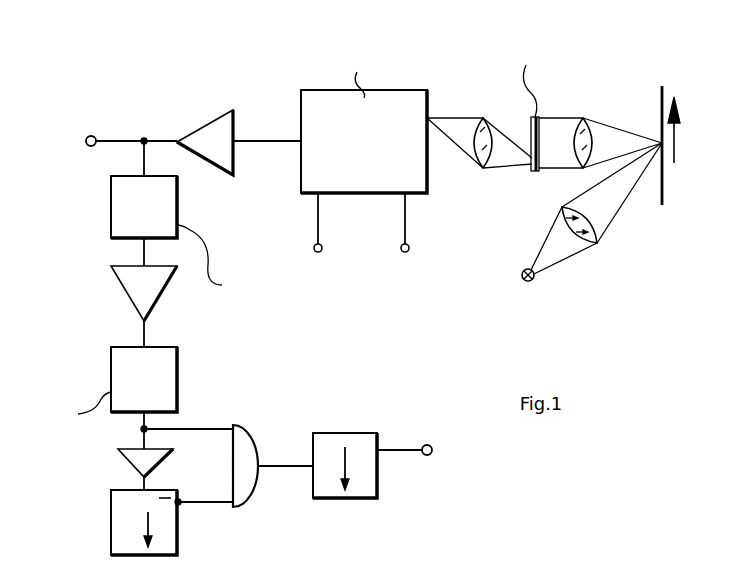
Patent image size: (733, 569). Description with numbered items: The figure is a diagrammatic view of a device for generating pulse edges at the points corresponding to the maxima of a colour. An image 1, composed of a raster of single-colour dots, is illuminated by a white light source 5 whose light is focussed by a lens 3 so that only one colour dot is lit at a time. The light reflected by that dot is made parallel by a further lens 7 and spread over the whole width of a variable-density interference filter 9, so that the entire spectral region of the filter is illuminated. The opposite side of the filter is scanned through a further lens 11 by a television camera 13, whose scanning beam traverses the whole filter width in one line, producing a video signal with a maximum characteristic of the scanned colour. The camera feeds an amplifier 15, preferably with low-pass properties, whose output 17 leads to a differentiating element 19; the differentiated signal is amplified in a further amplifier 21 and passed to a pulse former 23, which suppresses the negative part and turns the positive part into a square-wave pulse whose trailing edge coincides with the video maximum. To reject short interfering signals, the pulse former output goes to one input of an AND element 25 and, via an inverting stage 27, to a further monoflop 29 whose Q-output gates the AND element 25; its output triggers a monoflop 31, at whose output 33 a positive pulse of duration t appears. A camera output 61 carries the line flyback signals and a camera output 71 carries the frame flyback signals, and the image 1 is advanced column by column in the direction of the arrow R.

The image 1 is at (665, 197).
The lens 3 is at (598, 244).
The white light source 5 is at (535, 278).
The further lens 7 is at (583, 117).
The variable-density interference filter 9 is at (535, 166).
The further lens 11 is at (485, 117).
The television camera 13 is at (367, 154).
The amplifier 15 is at (208, 134).
The output of the amplifier 17 is at (113, 140).
The differentiating element 19 is at (119, 212).
The further amplifier 21 is at (138, 297).
The pulse former 23 is at (125, 375).
The AND element 25 is at (245, 440).
The inverting stage 27 is at (135, 464).
The further monoflop 29 is at (128, 522).
The monoflop 31 is at (337, 450).
The output of the monoflop 33 is at (426, 440).
The output of the television camera 61 is at (318, 236).
The output of the television camera 71 is at (405, 236).